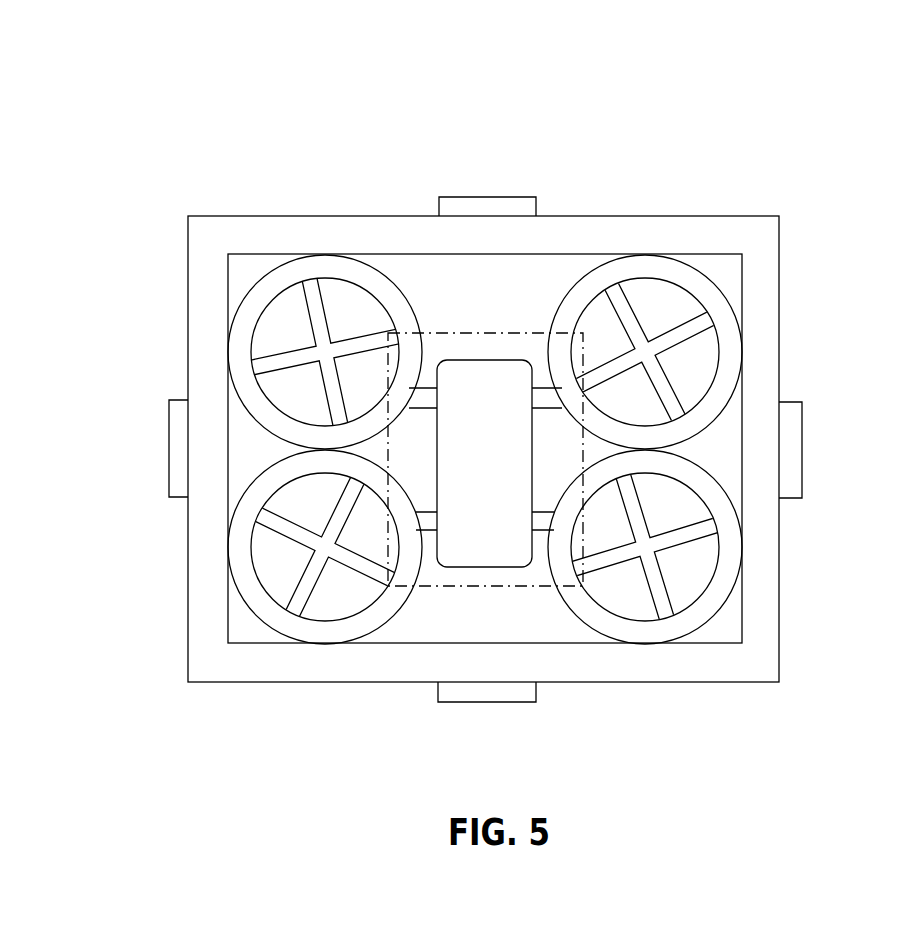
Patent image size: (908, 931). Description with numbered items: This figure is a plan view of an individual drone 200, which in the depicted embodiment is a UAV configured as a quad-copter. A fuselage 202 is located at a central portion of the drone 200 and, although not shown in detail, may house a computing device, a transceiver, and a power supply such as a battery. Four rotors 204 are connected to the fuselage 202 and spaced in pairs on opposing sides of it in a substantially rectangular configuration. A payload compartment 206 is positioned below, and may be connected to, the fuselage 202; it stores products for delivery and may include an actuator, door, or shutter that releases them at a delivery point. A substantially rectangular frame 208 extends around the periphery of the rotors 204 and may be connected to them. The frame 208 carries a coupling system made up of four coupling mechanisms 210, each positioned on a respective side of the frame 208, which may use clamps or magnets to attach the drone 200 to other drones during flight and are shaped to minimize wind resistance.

The drone 200 is at (106, 122).
The fuselage 202 is at (453, 376).
The rotors 204 is at (270, 332).
The payload compartment 206 is at (522, 333).
The frame 208 is at (713, 228).
The coupling mechanisms 210 is at (512, 205).